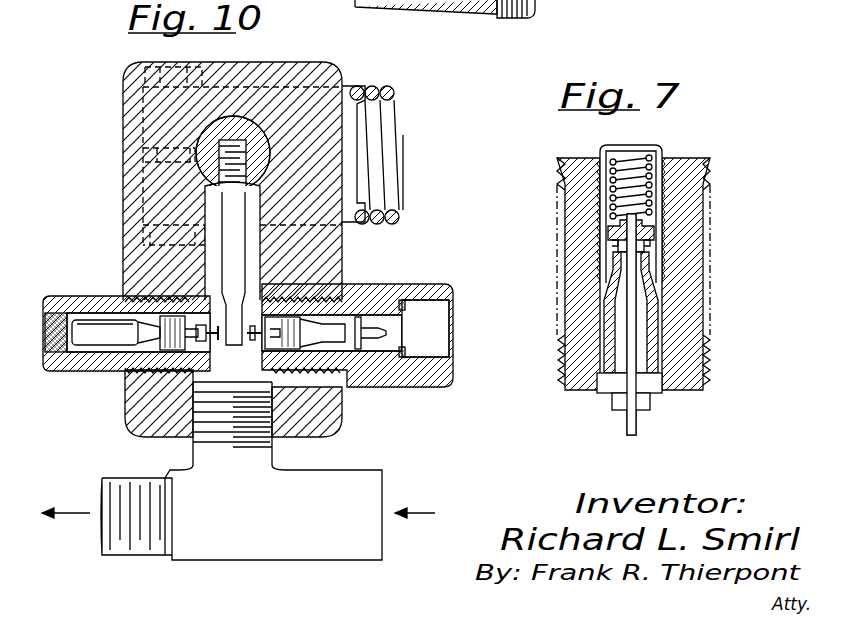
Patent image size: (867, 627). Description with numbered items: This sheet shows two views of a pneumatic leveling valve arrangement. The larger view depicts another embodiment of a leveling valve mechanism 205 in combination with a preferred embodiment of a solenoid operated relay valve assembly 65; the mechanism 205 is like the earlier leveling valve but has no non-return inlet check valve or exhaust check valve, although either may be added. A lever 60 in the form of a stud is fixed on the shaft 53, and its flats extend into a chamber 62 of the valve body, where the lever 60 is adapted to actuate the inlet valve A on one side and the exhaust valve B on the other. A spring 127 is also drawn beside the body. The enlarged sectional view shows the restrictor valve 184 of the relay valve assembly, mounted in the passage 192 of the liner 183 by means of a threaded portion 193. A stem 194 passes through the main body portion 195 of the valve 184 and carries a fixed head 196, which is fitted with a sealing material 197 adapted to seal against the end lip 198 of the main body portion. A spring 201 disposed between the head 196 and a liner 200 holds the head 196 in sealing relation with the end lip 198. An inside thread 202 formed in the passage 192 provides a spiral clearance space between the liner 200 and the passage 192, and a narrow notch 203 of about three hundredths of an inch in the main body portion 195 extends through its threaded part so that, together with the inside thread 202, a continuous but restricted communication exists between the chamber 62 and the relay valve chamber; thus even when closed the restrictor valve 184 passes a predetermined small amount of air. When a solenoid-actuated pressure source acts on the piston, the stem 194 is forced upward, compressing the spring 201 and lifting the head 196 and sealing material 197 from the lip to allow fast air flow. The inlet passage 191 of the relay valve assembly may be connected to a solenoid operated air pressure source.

In FIG. 10, the leveling valve mechanism 205 is at (118, 178).
In FIG. 10, the shaft 53 is at (258, 140).
In FIG. 10, the lever 60 is at (236, 266).
In FIG. 10, the chamber 62 is at (246, 362).
In FIG. 10, the relay valve assembly 65 is at (392, 474).
In FIG. 10, the spring 127 is at (396, 114).
In FIG. 10, the inlet valve A is at (354, 363).
In FIG. 10, the exhaust valve B is at (108, 305).
In FIG. 7, the liner 183 is at (580, 175).
In FIG. 7, the restrictor valve 184 is at (672, 294).
In FIG. 7, the inlet passage 191 is at (548, 0).
In FIG. 7, the passage 192 is at (606, 388).
In FIG. 7, the threaded portion 193 is at (662, 358).
In FIG. 7, the stem 194 is at (637, 428).
In FIG. 7, the main body portion 195 is at (658, 328).
In FIG. 7, the head 196 is at (660, 226).
In FIG. 7, the sealing material 197 is at (664, 241).
In FIG. 7, the end lip 198 is at (616, 249).
In FIG. 7, the liner 200 is at (654, 150).
In FIG. 7, the spring 201 is at (612, 212).
In FIG. 7, the inside thread 202 is at (600, 287).
In FIG. 7, the notch 203 is at (604, 327).